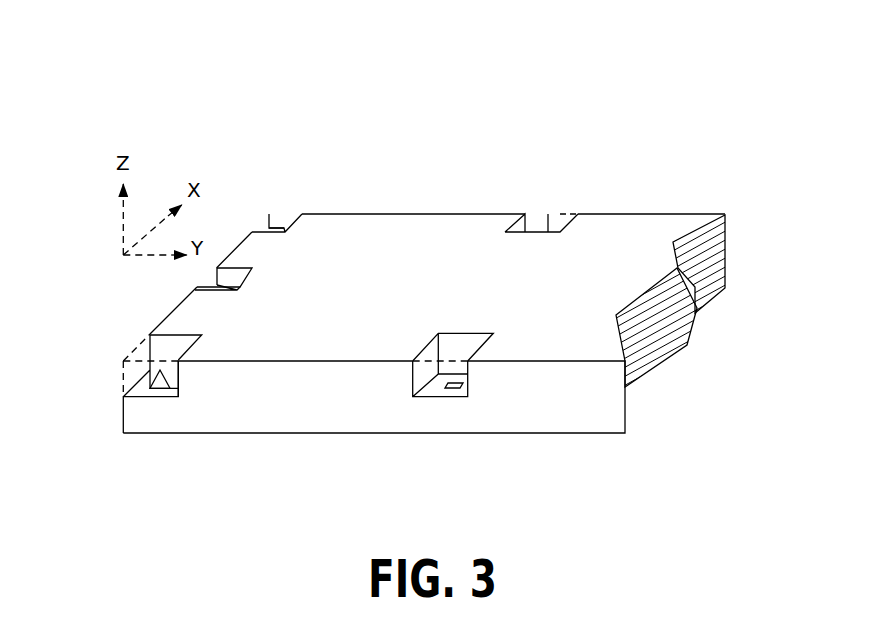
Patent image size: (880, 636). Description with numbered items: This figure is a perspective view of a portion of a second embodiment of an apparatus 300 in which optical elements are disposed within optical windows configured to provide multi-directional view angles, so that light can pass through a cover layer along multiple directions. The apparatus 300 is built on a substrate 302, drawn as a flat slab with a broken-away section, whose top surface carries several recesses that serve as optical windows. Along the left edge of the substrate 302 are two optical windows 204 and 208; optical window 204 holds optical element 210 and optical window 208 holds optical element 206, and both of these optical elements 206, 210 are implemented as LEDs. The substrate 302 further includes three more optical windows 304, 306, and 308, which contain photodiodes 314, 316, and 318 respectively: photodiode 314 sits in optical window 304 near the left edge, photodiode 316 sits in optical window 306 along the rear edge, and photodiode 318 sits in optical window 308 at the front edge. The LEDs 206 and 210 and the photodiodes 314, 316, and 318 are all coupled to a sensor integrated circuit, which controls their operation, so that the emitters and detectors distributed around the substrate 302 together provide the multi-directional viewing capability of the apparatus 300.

The apparatus 300 is at (222, 67).
The substrate 302 is at (405, 213).
The optical window 204 is at (296, 222).
The optical element 206 is at (152, 379).
The optical window 208 is at (179, 342).
The optical element 210 is at (272, 228).
The optical window 304 is at (240, 280).
The optical window 306 is at (546, 219).
The optical window 308 is at (438, 343).
The photodiode 314 is at (222, 288).
The photodiode 316 is at (548, 231).
The photodiode 318 is at (445, 386).